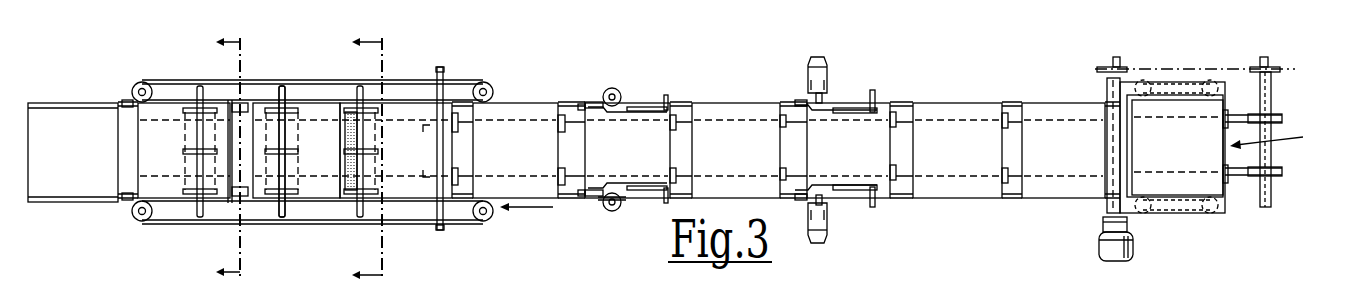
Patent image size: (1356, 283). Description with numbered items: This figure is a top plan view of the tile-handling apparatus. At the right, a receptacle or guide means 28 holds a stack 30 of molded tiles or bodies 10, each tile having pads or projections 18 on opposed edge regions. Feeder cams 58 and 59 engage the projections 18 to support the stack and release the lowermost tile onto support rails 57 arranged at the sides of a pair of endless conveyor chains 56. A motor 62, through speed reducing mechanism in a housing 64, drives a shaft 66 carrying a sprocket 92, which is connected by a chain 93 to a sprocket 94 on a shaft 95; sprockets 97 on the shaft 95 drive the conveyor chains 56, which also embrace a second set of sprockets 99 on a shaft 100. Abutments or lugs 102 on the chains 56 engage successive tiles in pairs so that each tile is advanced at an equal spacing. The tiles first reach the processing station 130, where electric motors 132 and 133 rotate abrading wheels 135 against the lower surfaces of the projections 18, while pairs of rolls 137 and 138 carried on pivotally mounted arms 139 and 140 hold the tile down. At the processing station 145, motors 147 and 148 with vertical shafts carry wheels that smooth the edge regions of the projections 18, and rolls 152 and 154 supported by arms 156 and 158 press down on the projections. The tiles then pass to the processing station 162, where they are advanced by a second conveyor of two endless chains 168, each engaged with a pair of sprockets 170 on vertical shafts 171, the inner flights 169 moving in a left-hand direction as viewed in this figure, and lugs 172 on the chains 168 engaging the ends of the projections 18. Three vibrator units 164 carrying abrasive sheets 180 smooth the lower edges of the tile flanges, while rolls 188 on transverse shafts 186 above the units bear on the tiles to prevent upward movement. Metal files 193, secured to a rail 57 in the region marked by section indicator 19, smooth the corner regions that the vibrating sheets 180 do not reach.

The tile 10 is at (70, 166).
The projections 18 is at (1178, 196).
The section line 19 is at (212, 157).
The receptacle 28 is at (1281, 139).
The stack 30 is at (1236, 282).
The endless conveyor chains 56 is at (1017, 115).
The support rails 57 is at (127, 102).
The cam 58 is at (1148, 96).
The cam 59 is at (1197, 82).
The motor 62 is at (1099, 247).
The housing 64 is at (1103, 222).
The shaft 66 is at (1107, 82).
The sprocket 92 is at (1097, 70).
The chain 93 is at (1165, 55).
The sprocket 94 is at (1297, 45).
The shaft 95 is at (1273, 88).
The sprockets 97 is at (1279, 114).
The second set of sprockets 99 is at (428, 130).
The shaft 100 is at (417, 145).
The abutments 102 is at (678, 120).
The first processing station 130 is at (829, 54).
The electric motor 132 is at (812, 233).
The electric motor 133 is at (808, 88).
The abrading wheel 135 is at (812, 96).
The rolls 137 is at (836, 106).
The rolls 138 is at (803, 102).
The arm 139 is at (858, 106).
The arm 140 is at (828, 111).
The processing station 145 is at (611, 86).
The motor 147 is at (602, 207).
The motor 148 is at (590, 100).
The rolls 152 is at (587, 105).
The rolls 154 is at (630, 104).
The arms 156 is at (606, 184).
The arms 158 is at (648, 104).
The third processing station 162 is at (299, 70).
The vibrator units 164 is at (180, 118).
The endless chains 168 is at (398, 236).
The inner flights 169 is at (163, 100).
The sprockets 170 is at (133, 90).
The vertical shaft 171 is at (140, 84).
The lugs 172 is at (276, 78).
The abrasive sheet 180 is at (188, 134).
The transverse shaft 186 is at (197, 212).
The rolls 188 is at (198, 160).
The metal files 193 is at (220, 100).